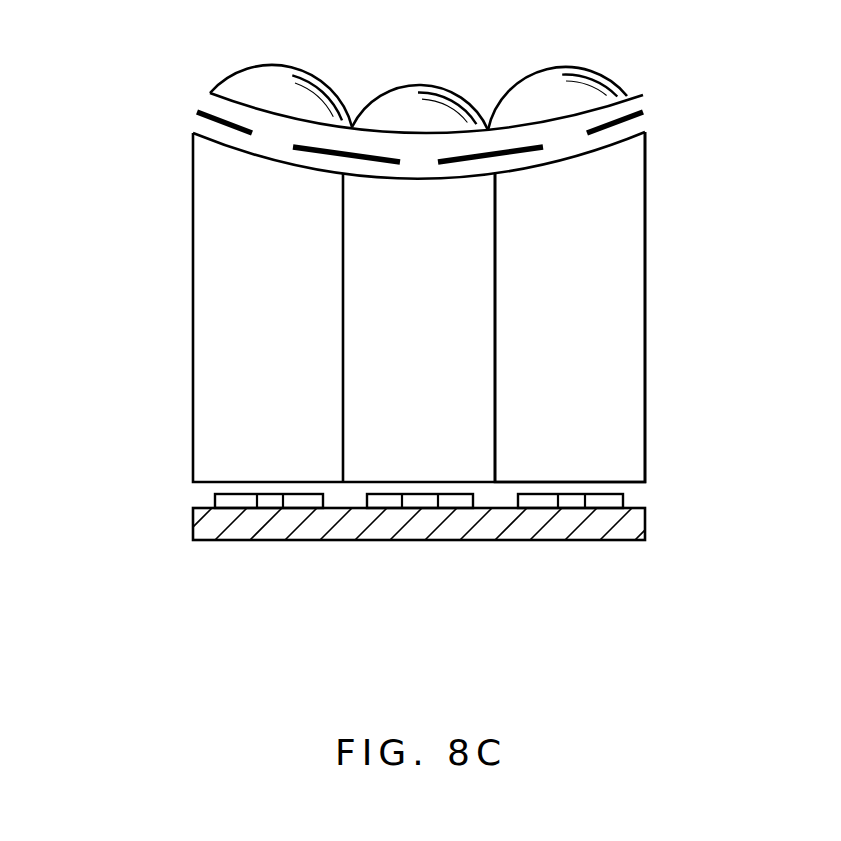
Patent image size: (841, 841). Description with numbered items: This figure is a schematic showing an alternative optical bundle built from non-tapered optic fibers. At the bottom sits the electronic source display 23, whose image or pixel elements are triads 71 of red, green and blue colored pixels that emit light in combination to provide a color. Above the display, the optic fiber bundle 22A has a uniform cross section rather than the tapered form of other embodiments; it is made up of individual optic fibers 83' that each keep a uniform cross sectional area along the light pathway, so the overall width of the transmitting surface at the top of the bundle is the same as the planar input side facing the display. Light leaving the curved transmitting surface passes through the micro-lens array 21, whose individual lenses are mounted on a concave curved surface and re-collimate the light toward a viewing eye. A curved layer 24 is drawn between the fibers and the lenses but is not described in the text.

The micro-lens array 21 is at (590, 65).
The optic fiber bundle 22A is at (645, 242).
The electronic source display 23 is at (597, 530).
The curved partial reflecting layer 24 is at (645, 107).
The triad 71 is at (625, 500).
The individual optic fibers 83' is at (625, 307).